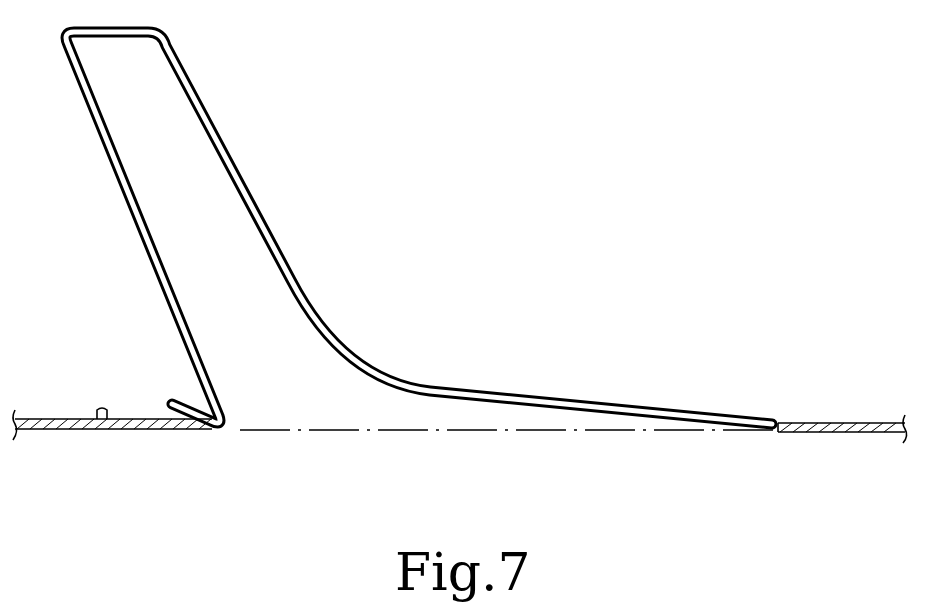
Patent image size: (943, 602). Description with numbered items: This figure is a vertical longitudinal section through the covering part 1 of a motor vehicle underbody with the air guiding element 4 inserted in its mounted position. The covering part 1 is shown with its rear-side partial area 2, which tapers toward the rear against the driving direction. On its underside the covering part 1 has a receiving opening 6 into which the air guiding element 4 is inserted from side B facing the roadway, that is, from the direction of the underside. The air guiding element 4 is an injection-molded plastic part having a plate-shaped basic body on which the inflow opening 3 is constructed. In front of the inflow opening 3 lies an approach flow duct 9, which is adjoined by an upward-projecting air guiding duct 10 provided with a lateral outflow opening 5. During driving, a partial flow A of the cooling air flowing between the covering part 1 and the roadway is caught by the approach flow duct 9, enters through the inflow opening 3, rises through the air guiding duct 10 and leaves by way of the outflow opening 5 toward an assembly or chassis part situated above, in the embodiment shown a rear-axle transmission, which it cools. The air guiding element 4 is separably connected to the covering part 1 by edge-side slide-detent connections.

The covering part 1 is at (49, 413).
The rear-side partial area 2 is at (800, 422).
The inflow opening 3 is at (291, 402).
The air guiding element 4 is at (247, 176).
The outflow opening 5 is at (163, 137).
The receiving opening 6 is at (393, 412).
The approach flow duct 9 is at (489, 410).
The air guiding duct 10 is at (207, 192).
The partial flow A is at (676, 487).
The side facing the roadway B is at (241, 457).